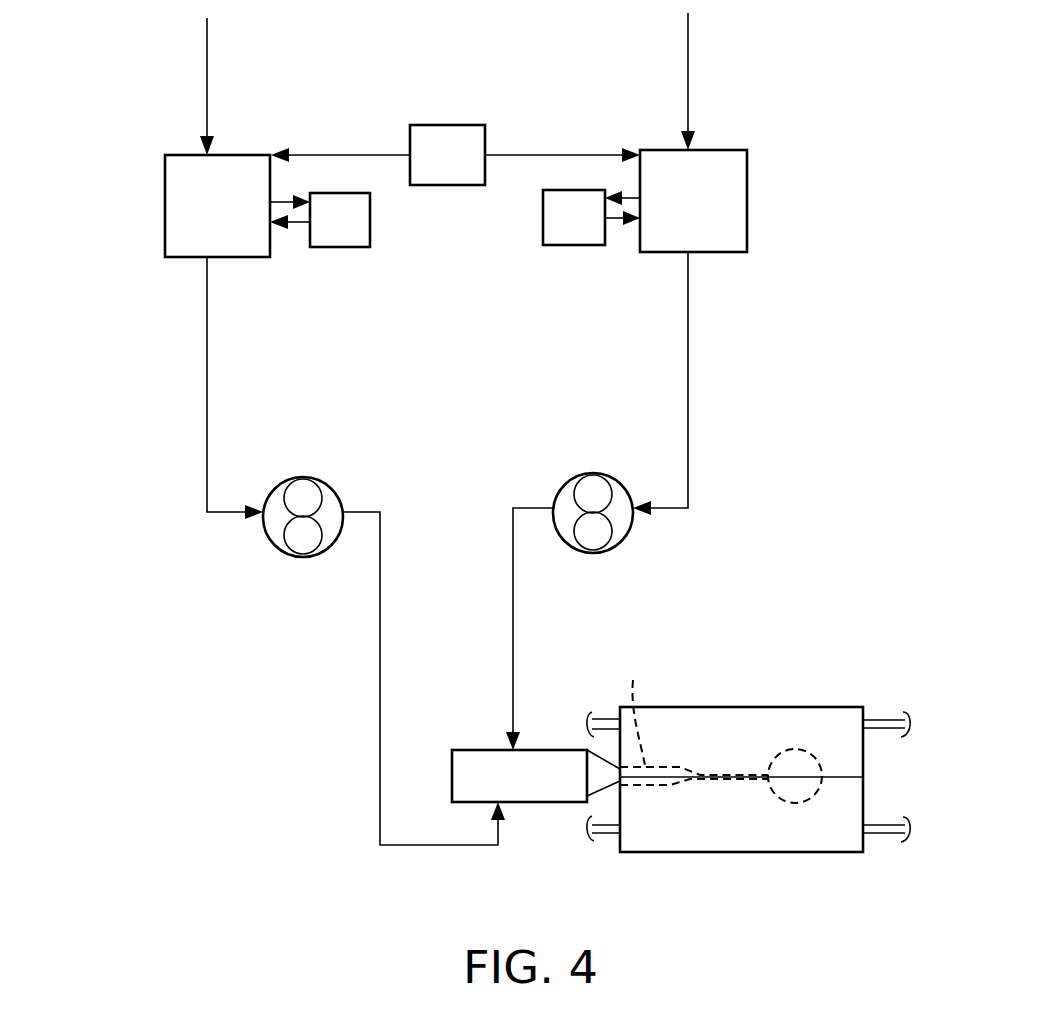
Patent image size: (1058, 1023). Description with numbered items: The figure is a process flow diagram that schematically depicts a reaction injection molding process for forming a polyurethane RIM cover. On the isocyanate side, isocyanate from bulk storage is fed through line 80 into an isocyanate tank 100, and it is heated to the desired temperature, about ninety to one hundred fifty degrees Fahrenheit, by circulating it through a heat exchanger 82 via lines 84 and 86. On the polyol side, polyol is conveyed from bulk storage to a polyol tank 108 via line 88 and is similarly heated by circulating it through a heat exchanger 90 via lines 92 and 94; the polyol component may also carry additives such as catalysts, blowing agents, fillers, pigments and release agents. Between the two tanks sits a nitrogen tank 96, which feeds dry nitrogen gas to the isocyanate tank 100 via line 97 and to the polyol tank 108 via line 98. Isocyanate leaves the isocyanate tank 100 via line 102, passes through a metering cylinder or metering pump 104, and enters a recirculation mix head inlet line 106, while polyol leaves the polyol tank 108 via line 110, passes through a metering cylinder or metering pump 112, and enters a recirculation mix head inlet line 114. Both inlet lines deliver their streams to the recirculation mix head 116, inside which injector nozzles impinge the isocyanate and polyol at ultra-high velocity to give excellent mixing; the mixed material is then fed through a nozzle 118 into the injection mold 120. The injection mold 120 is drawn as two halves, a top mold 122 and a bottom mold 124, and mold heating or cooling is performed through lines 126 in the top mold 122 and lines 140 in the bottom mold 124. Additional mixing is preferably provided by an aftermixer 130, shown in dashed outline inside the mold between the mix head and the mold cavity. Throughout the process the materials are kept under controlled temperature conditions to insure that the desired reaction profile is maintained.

The line 80 is at (207, 52).
The heat exchanger 82 is at (370, 237).
The line 84 is at (280, 202).
The line 86 is at (295, 225).
The line 88 is at (688, 50).
The heat exchanger 90 is at (543, 228).
The line 92 is at (630, 198).
The line 94 is at (615, 225).
The nitrogen tank 96 is at (452, 125).
The line 97 is at (330, 155).
The line 98 is at (552, 155).
The isocyanate tank 100 is at (165, 195).
The line 102 is at (207, 362).
The metering pump 104 is at (275, 545).
The recirculation mix head inlet line 106 is at (380, 705).
The polyol tank 108 is at (747, 190).
The line 110 is at (688, 357).
The metering pump 112 is at (612, 540).
The recirculation mix head inlet line 114 is at (513, 612).
The recirculation mix head 116 is at (508, 802).
The nozzle 118 is at (620, 779).
The injection mold 120 is at (762, 700).
The top mold 122 is at (702, 715).
The bottom mold 124 is at (708, 852).
The lines 126 is at (892, 710).
The aftermixer 130 is at (721, 725).
The lines 140 is at (883, 840).